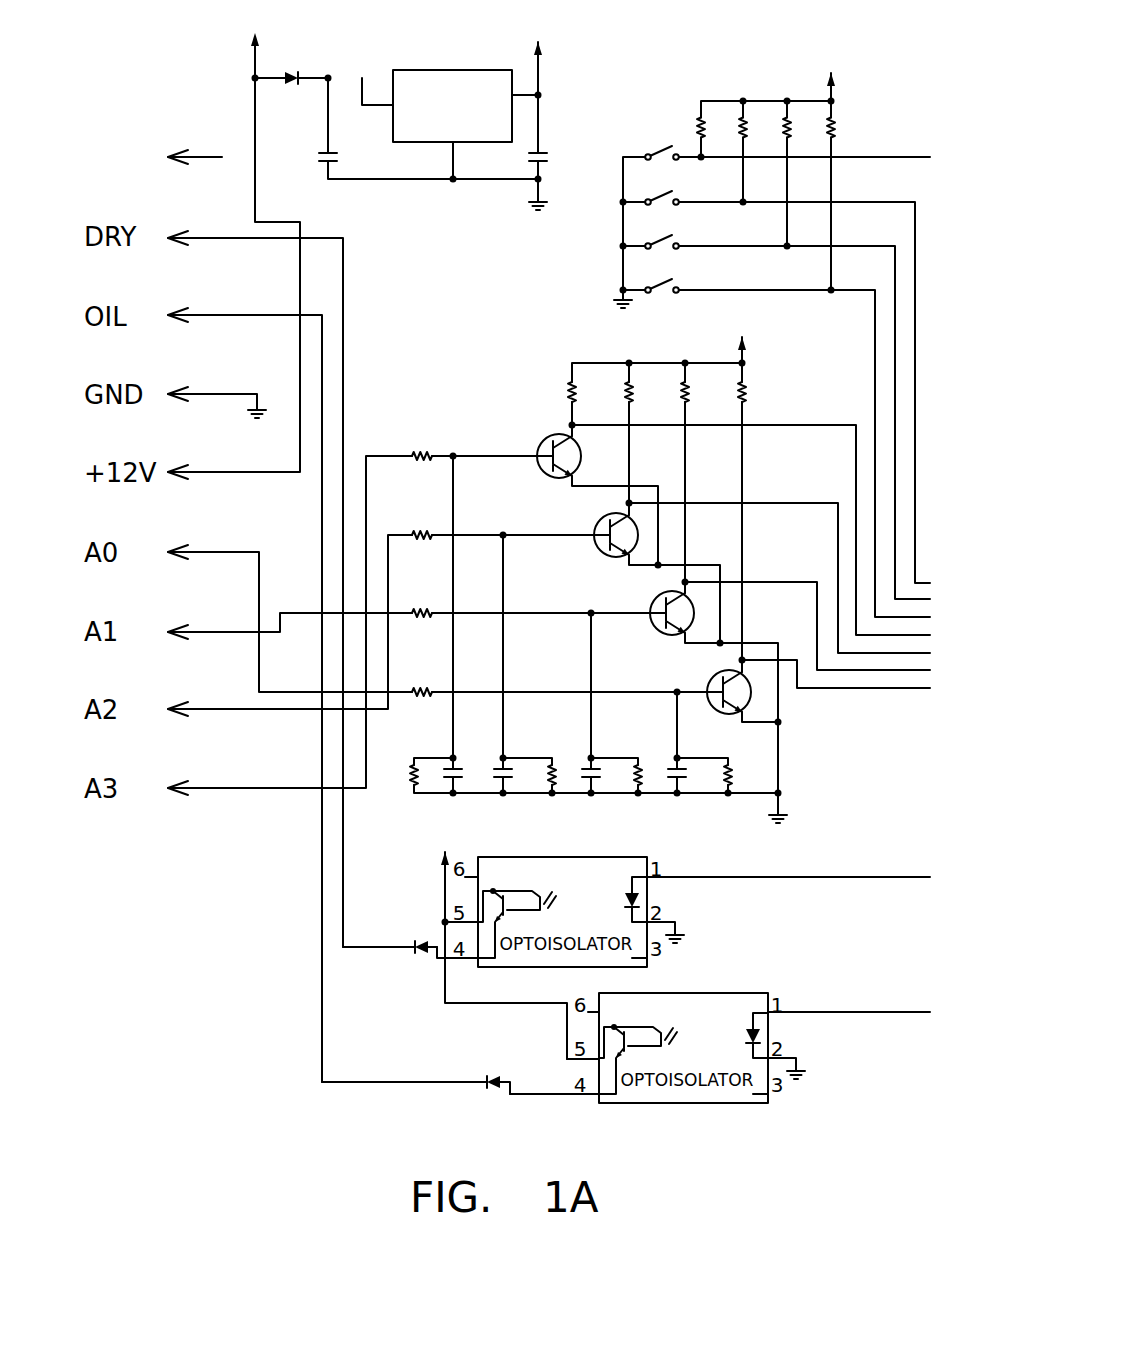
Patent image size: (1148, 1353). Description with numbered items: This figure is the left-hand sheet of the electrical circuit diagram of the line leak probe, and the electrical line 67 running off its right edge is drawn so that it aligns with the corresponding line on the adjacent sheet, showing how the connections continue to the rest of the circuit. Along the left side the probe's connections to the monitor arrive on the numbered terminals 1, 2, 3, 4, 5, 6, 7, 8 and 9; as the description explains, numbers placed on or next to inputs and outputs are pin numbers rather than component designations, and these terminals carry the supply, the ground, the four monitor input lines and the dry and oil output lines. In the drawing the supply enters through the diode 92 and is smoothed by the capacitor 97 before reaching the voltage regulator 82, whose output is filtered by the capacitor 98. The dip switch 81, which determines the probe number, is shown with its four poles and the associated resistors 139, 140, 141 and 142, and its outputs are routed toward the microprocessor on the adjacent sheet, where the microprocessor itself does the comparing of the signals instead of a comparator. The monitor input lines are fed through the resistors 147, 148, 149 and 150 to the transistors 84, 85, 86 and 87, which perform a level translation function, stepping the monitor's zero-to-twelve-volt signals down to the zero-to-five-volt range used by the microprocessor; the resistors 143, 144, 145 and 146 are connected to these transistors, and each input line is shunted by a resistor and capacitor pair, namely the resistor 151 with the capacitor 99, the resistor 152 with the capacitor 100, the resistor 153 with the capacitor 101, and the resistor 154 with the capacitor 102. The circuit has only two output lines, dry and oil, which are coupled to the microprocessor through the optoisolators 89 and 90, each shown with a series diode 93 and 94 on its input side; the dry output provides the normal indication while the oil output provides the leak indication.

The pin number 1 is at (195, 146).
The pin number 2 is at (255, 578).
The pin number 3 is at (245, 684).
The pin number 4 is at (217, 391).
The pin number 5 is at (234, 256).
The pin number 6 is at (445, 607).
The pin number 7 is at (417, 621).
The pin number 8 is at (389, 625).
The pin number 9 is at (360, 625).
The electrical line 67 is at (868, 718).
The dip switch 81 is at (649, 118).
The voltage regulator 82 is at (455, 78).
The transistor 84 is at (540, 445).
The transistor 85 is at (597, 523).
The transistor 86 is at (652, 601).
The transistor 87 is at (708, 680).
The optoisolator 89 is at (523, 969).
The optoisolator 90 is at (645, 1104).
The diode 92 is at (291, 70).
The diode 93 is at (418, 956).
The diode 94 is at (491, 1092).
The capacitor 97 is at (322, 167).
The capacitor 98 is at (546, 155).
The capacitor 99 is at (461, 783).
The capacitor 100 is at (510, 783).
The capacitor 101 is at (600, 783).
The capacitor 102 is at (685, 783).
The resistor 139 is at (835, 116).
The resistor 140 is at (794, 116).
The resistor 141 is at (746, 116).
The resistor 142 is at (704, 116).
The resistor 143 is at (747, 381).
The resistor 144 is at (690, 381).
The resistor 145 is at (634, 381).
The resistor 146 is at (578, 381).
The resistor 147 is at (420, 448).
The resistor 148 is at (420, 527).
The resistor 149 is at (420, 605).
The resistor 150 is at (420, 684).
The resistor 151 is at (411, 768).
The resistor 152 is at (547, 768).
The resistor 153 is at (633, 768).
The resistor 154 is at (722, 768).